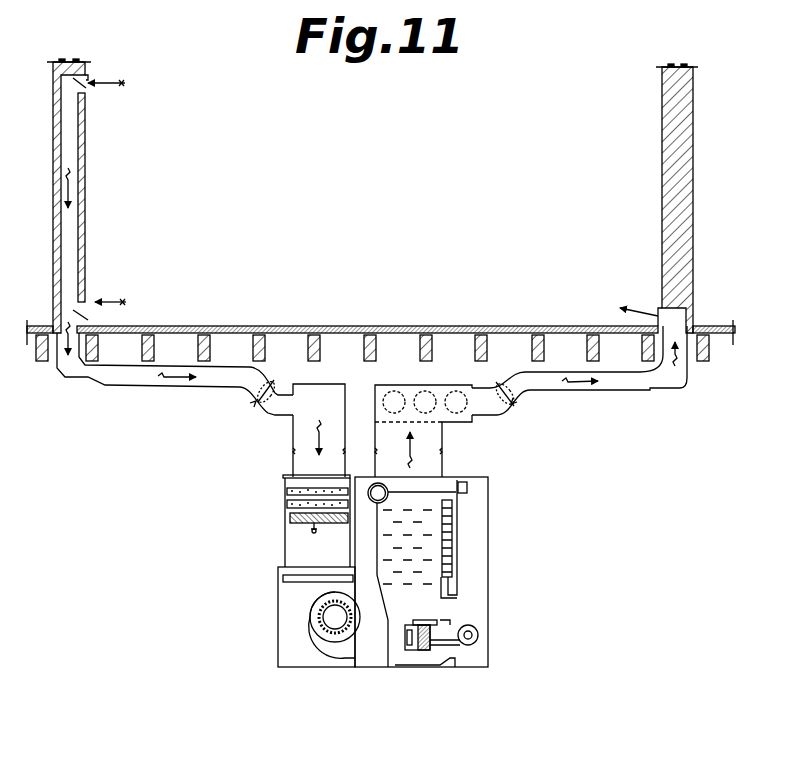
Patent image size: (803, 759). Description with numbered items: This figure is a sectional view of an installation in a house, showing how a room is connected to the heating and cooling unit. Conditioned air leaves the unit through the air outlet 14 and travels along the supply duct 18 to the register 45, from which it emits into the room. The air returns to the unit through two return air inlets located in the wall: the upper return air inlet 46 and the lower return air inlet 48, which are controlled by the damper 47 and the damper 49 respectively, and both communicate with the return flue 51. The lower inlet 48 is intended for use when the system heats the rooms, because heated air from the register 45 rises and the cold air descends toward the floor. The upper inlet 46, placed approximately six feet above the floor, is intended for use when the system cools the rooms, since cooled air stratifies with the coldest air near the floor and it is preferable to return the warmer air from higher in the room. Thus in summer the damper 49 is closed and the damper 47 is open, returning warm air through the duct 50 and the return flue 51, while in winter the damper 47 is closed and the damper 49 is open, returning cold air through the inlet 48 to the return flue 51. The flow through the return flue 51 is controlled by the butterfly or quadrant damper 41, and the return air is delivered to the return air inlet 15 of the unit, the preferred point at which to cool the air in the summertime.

The air outlet 14 is at (425, 462).
The return air inlet 15 is at (311, 441).
The supply duct 18 is at (627, 388).
The butterfly or quadrant damper 41 is at (264, 401).
The air outlet 45 is at (658, 312).
The return air inlet 46 is at (87, 75).
The damper 47 is at (88, 87).
The return air inlet 48 is at (86, 305).
The damper 49 is at (84, 316).
The duct 50 is at (73, 238).
The return flue 51 is at (133, 381).